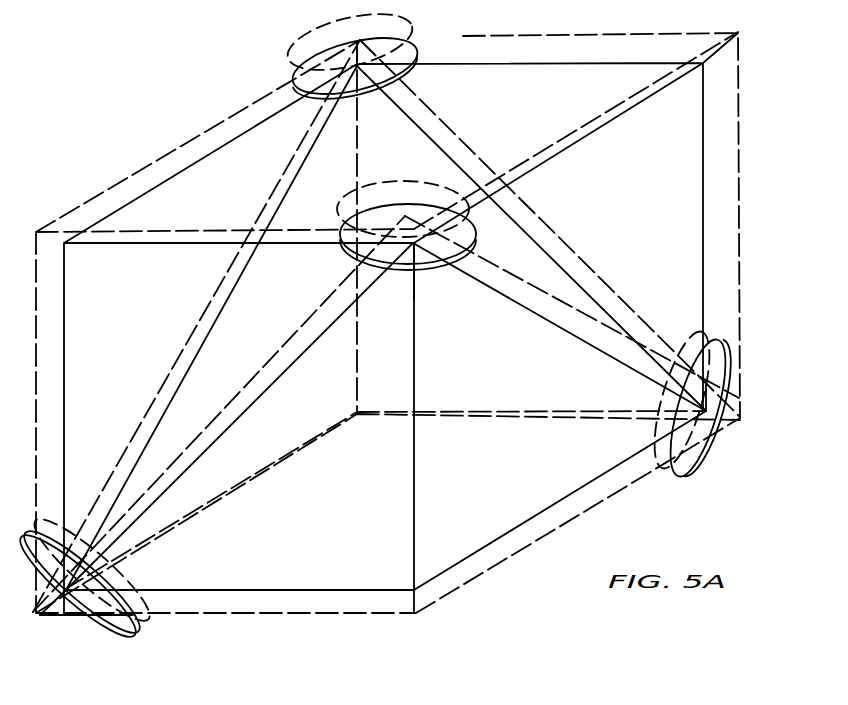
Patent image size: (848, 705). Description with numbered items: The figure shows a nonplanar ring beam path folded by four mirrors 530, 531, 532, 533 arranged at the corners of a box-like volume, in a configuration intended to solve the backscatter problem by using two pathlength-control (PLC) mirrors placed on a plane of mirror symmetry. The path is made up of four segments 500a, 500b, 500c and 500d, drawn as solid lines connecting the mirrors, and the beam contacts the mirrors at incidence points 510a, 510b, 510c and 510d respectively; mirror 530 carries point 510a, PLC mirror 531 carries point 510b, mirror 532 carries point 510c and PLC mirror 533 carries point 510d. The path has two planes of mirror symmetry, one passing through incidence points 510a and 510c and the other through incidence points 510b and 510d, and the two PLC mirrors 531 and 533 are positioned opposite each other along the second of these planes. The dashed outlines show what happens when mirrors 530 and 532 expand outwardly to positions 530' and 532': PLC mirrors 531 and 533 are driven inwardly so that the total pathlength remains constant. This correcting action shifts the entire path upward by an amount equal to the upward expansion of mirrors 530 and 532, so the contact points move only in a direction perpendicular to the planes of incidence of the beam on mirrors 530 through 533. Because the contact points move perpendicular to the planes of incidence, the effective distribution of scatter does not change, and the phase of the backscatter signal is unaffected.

The path segment 500a is at (271, 383).
The path segment 500b is at (240, 278).
The path segment 500c is at (452, 158).
The path segment 500d is at (576, 345).
The incidence point 510a is at (402, 266).
The incidence point 510b is at (62, 602).
The incidence point 510c is at (300, 48).
The incidence point 510d is at (712, 408).
The mirror 530 is at (408, 258).
The expanded mirror position 530' is at (403, 191).
The PLC mirror 531 is at (126, 632).
The mirror 532 is at (395, 60).
The expanded mirror position 532' is at (373, 40).
The PLC mirror 533 is at (710, 456).